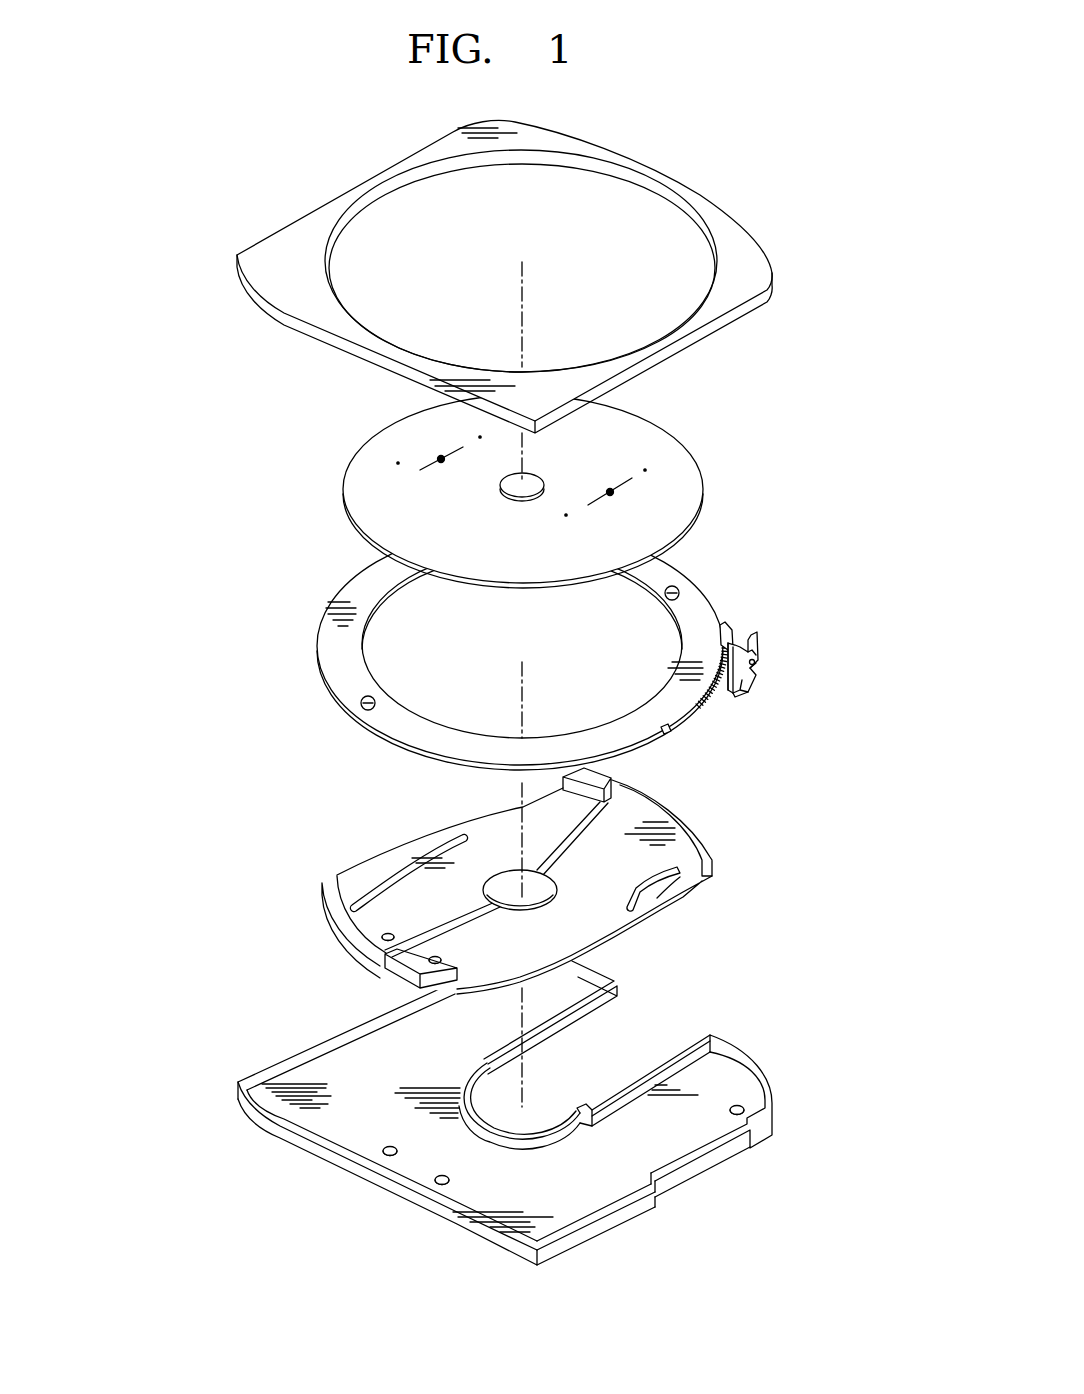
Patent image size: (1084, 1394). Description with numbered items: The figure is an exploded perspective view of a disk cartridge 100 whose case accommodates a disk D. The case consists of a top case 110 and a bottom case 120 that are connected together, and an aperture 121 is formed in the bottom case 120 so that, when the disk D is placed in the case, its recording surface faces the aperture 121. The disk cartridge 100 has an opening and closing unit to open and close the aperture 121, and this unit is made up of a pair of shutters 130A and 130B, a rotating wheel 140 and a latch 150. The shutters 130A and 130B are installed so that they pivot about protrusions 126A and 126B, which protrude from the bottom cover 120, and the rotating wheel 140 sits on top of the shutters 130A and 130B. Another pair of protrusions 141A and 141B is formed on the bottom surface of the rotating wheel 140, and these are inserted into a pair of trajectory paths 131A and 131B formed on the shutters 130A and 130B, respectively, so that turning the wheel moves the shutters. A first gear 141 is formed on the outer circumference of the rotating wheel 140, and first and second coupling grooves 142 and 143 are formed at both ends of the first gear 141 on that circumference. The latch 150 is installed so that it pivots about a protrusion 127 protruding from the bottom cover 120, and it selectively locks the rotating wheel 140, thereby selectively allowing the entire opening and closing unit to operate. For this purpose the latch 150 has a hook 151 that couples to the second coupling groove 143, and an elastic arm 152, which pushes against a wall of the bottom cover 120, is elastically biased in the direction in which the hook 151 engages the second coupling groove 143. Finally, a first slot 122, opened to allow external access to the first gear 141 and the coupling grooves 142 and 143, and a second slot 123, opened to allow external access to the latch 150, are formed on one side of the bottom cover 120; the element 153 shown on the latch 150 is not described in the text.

The disk cartridge 100 is at (266, 163).
The top case 110 is at (676, 177).
The disk D is at (682, 433).
The bottom case 120 is at (461, 1113).
The aperture 121 is at (595, 1075).
The first slot 122 is at (665, 1188).
The second slot 123 is at (742, 1146).
The protrusion 126A is at (436, 1185).
The protrusion 126B is at (382, 1157).
The protrusion 127 is at (741, 1105).
The shutter 130A is at (611, 881).
The shutter 130B is at (442, 875).
The trajectory path 131A is at (672, 884).
The trajectory path 131B is at (397, 860).
The rotating wheel 140 is at (551, 655).
The first gear 141 is at (713, 703).
The protrusion 141A is at (680, 588).
The protrusion 141B is at (358, 696).
The first coupling groove 142 is at (668, 733).
The second coupling groove 143 is at (724, 623).
The latch 150 is at (799, 654).
The hook 151 is at (736, 648).
The elastic arm 152 is at (759, 648).
The stopper 153 is at (749, 691).